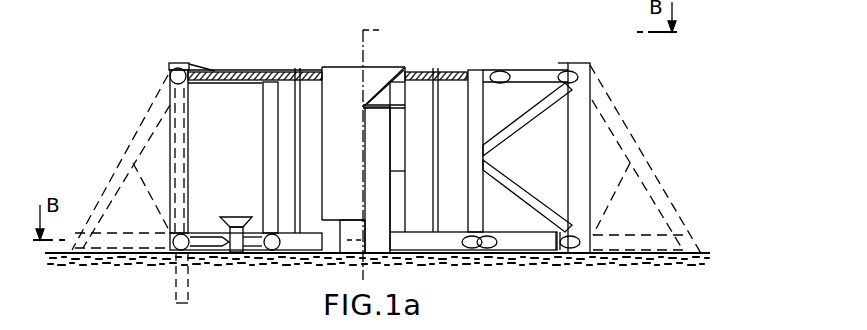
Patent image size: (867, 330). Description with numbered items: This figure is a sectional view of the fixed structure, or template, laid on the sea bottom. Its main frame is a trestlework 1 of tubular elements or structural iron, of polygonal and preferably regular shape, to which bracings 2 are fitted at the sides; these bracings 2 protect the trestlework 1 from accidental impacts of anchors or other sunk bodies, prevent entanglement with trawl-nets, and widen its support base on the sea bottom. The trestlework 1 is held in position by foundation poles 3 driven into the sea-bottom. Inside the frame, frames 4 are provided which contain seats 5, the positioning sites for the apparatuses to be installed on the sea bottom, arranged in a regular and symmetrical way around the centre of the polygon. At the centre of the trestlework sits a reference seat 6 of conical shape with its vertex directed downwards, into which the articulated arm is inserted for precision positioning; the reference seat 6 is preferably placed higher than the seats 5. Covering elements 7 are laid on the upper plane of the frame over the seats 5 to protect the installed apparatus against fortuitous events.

The trestlework 1 is at (585, 137).
The bracings 2 is at (648, 175).
The foundation poles 3 is at (177, 281).
The frames 4 is at (527, 195).
The seats 5 is at (237, 217).
The reference seat 6 is at (382, 77).
The covering elements 7 is at (305, 66).